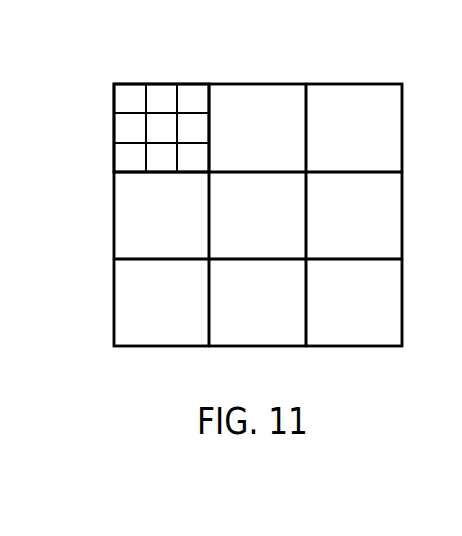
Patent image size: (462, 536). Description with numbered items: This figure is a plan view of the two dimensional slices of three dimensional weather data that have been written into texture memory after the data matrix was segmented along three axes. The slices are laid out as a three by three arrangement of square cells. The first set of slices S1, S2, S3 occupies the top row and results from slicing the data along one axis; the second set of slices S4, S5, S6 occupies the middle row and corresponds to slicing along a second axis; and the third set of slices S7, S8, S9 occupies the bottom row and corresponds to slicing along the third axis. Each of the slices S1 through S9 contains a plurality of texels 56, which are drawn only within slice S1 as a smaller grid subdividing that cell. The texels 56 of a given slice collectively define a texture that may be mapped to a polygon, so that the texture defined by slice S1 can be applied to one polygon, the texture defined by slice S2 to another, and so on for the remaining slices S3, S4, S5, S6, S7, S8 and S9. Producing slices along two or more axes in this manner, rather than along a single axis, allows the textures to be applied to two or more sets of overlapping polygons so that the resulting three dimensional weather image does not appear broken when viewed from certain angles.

The texels 56 is at (162, 88).
The slice S1 is at (161, 128).
The slice S2 is at (257, 128).
The slice S3 is at (354, 128).
The slice S4 is at (161, 215).
The slice S5 is at (257, 215).
The slice S6 is at (354, 215).
The slice S7 is at (161, 302).
The slice S8 is at (257, 302).
The slice S9 is at (354, 302).